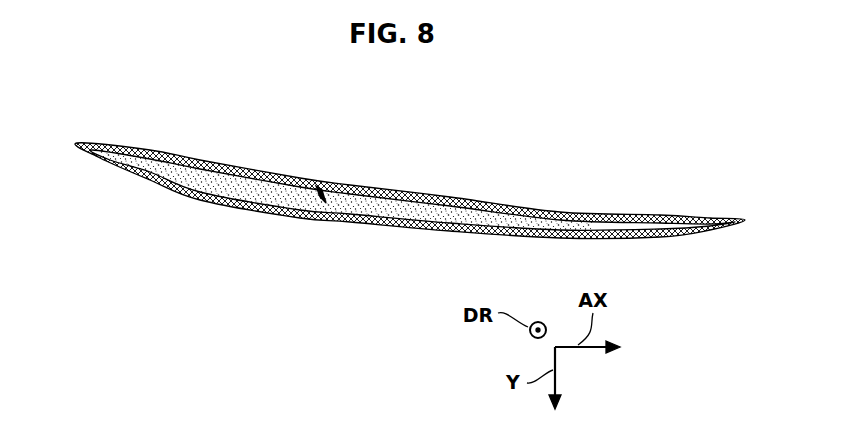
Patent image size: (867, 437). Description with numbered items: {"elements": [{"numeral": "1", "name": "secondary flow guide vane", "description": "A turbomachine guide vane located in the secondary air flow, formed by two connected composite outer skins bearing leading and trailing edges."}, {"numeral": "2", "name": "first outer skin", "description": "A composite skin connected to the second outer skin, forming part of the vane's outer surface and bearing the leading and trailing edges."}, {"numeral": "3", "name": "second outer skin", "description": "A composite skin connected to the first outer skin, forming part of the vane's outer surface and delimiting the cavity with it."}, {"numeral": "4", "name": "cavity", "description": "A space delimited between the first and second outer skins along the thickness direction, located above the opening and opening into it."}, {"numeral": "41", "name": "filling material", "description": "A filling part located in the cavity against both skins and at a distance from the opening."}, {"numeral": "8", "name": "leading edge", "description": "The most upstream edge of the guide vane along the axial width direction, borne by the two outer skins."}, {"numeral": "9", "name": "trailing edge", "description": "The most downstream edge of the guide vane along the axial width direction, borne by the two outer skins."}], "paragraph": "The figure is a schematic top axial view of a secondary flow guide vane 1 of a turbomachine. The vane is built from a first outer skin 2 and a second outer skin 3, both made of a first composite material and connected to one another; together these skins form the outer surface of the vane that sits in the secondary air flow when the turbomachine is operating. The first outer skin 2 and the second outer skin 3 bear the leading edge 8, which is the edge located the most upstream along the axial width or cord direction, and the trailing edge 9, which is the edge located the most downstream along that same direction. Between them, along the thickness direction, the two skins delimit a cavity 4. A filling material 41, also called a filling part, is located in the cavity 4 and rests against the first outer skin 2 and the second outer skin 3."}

The blade 1 is at (322, 262).
The pressure side 2 is at (415, 230).
The suction side 3 is at (435, 196).
The skin 4 is at (312, 187).
The core 41 is at (378, 208).
The leading edge 8 is at (77, 143).
The trailing edge 9 is at (745, 220).